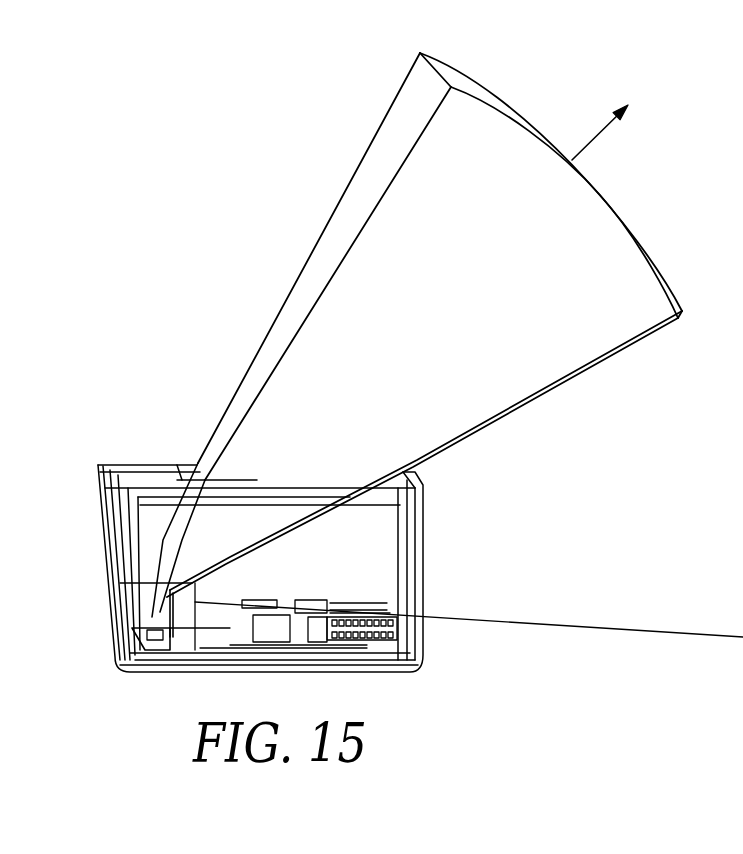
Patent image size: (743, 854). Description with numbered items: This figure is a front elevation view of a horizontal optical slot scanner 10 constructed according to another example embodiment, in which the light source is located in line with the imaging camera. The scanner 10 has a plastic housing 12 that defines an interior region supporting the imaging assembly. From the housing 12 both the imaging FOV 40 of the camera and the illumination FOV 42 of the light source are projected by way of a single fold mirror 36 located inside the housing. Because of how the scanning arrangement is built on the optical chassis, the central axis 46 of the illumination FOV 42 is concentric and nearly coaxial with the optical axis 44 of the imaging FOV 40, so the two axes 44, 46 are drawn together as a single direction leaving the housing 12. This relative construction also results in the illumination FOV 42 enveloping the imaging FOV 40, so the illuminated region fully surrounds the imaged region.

The optical slot scanner 10 is at (399, 351).
The housing 12 is at (423, 552).
The fold mirror 36 is at (167, 545).
The imaging FOV 40 is at (456, 73).
The illumination FOV 42 is at (388, 128).
The optical axis 44 is at (626, 135).
The central axis 46 is at (598, 136).